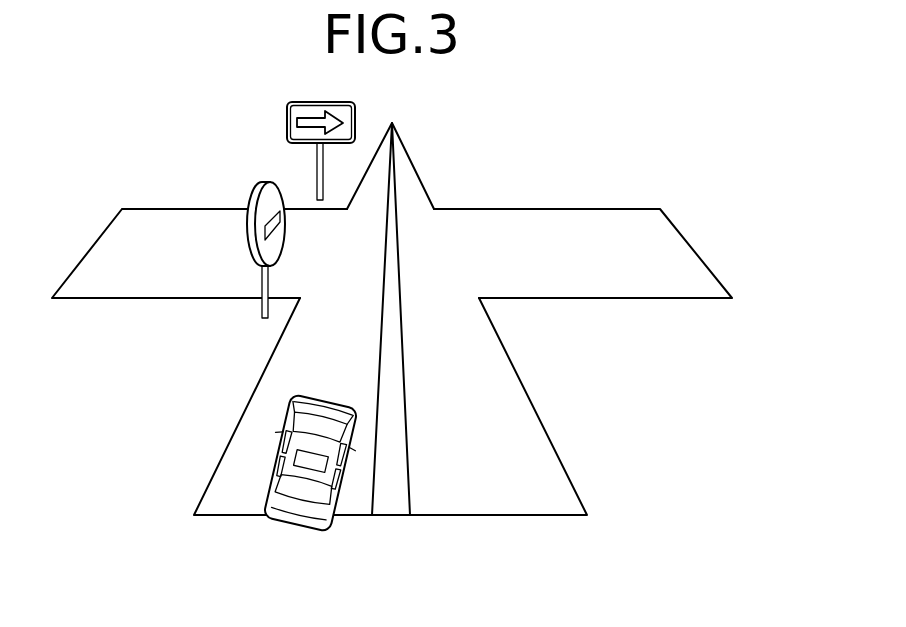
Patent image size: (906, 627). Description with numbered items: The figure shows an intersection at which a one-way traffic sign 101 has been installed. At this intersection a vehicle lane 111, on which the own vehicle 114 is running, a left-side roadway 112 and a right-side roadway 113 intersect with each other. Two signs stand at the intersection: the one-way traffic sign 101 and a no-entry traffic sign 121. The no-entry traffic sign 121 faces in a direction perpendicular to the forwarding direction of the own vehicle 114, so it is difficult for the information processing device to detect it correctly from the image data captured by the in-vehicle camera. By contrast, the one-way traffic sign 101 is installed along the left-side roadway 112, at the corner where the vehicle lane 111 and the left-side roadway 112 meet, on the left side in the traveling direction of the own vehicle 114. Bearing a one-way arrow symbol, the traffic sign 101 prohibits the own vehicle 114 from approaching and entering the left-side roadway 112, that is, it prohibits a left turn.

The one-way traffic sign 101 is at (292, 122).
The vehicle lane 111 is at (290, 362).
The left-side roadway 112 is at (105, 290).
The right-side roadway 113 is at (650, 290).
The own vehicle 114 is at (267, 520).
The no-entry traffic sign 121 is at (258, 200).